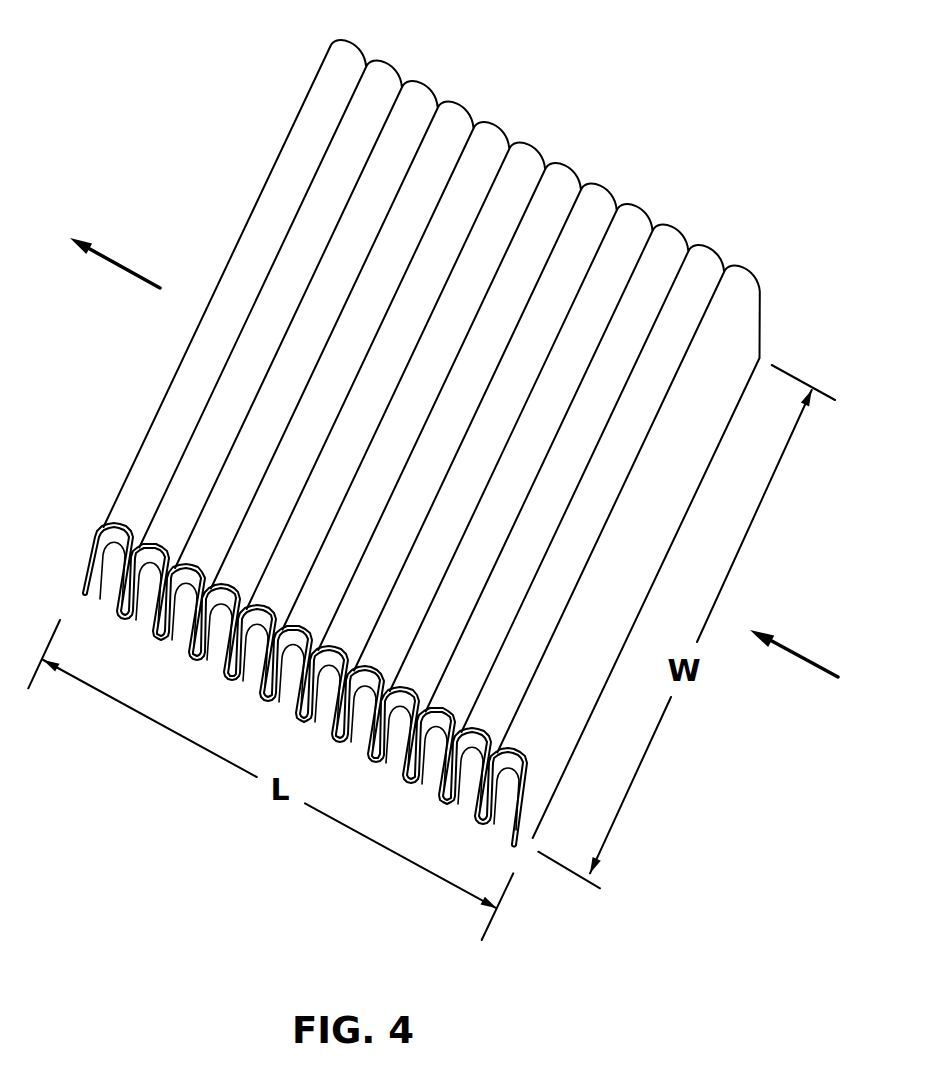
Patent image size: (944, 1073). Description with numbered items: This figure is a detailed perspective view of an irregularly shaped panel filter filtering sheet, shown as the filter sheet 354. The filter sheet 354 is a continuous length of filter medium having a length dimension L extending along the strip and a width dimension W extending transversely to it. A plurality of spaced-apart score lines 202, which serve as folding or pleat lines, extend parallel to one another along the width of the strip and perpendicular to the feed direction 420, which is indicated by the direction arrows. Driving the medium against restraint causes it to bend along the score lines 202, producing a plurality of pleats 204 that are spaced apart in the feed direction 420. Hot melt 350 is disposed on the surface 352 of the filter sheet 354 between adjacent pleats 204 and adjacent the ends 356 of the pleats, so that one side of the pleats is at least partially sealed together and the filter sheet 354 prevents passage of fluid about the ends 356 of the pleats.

The score lines 202 is at (328, 143).
The pleats 204 is at (233, 443).
The hot melt 350 is at (495, 123).
The surface 352 is at (632, 315).
The filter sheet 354 is at (663, 197).
The ends of the pleats 356 is at (568, 163).
The feed direction 420 is at (125, 260).